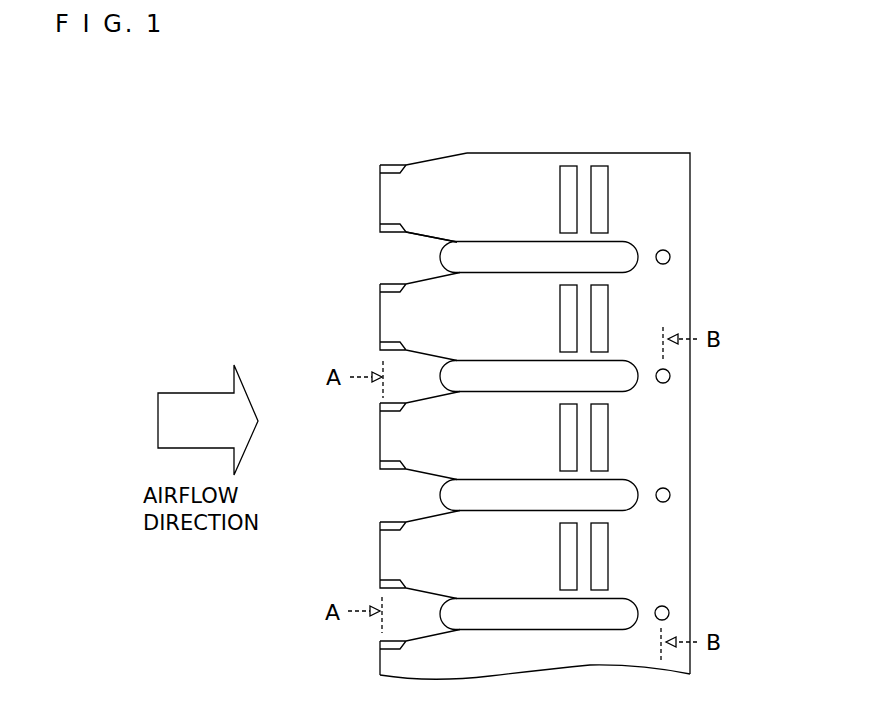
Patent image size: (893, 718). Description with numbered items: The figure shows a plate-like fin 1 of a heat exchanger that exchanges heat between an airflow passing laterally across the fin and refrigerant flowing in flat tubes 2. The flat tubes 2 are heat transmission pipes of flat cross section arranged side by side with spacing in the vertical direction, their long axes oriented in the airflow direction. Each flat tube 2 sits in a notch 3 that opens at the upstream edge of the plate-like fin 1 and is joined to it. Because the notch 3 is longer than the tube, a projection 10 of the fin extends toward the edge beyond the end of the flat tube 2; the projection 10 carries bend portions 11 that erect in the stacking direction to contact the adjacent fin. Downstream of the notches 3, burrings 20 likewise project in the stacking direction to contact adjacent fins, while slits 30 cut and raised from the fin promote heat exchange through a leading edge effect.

The plate-like fin 1 is at (643, 153).
The flat tube 2 is at (525, 257).
The notch 3 is at (428, 255).
The projection 10 is at (428, 195).
The bend portion 11 is at (380, 172).
The burring 20 is at (670, 255).
The slit 30 is at (609, 206).